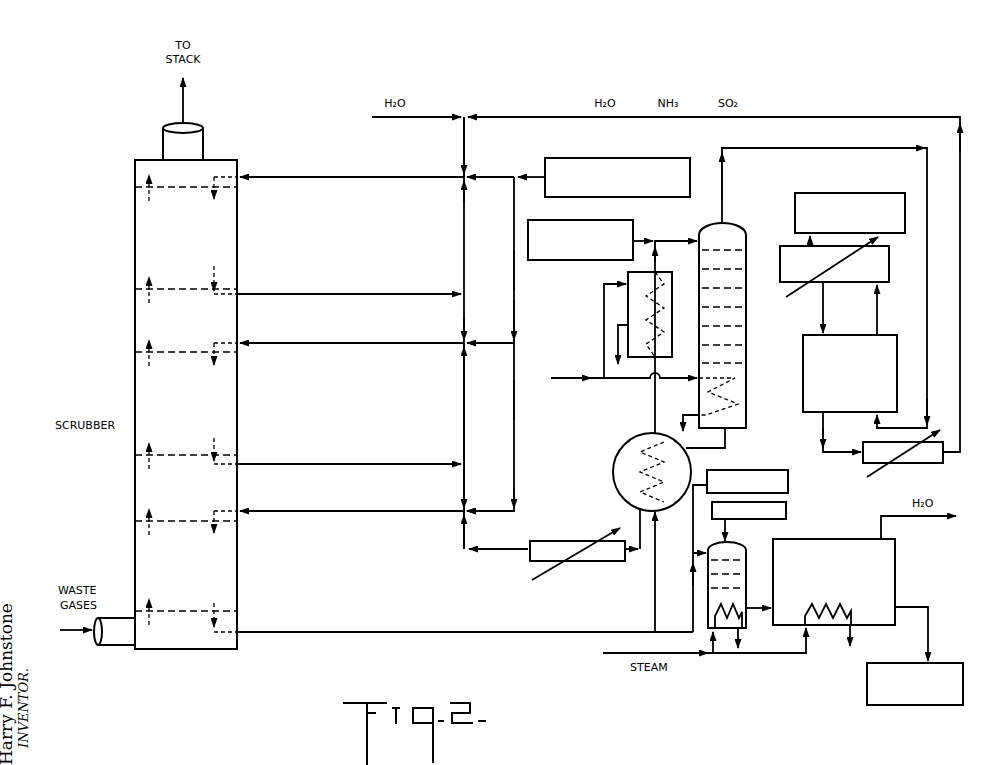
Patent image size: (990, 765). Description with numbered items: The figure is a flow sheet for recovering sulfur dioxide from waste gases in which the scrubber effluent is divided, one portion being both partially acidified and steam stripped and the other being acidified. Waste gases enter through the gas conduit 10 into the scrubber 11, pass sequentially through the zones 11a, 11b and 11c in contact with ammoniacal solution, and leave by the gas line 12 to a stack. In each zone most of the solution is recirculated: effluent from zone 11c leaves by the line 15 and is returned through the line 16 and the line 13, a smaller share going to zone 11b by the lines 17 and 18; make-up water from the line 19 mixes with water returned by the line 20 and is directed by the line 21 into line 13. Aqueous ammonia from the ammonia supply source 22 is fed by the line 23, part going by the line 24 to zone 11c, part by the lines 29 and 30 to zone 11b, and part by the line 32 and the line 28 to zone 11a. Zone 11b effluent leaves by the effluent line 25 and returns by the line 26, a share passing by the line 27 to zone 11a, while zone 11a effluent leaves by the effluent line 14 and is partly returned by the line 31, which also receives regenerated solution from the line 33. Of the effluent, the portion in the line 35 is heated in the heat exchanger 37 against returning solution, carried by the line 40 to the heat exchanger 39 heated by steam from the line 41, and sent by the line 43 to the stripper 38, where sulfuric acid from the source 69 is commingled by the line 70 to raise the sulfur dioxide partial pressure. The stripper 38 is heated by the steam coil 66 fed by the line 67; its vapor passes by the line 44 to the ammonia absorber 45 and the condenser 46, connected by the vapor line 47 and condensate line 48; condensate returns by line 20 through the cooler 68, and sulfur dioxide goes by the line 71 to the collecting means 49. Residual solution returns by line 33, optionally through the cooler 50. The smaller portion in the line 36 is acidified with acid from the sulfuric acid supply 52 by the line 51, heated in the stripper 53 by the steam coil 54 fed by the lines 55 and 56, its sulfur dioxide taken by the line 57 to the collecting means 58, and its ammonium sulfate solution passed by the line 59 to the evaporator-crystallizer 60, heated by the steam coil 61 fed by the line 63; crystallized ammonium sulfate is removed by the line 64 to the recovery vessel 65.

The gas conduit 10 is at (113, 646).
The scrubber 11 is at (135, 447).
The scrubber zone 11a is at (135, 556).
The scrubber zone 11b is at (237, 406).
The scrubber zone 11c is at (135, 232).
The gas line 12 is at (205, 136).
The line 13 is at (292, 177).
The effluent line 14 is at (322, 632).
The line 15 is at (292, 294).
The line 16 is at (464, 217).
The line 17 is at (464, 318).
The line 18 is at (318, 344).
The line 19 is at (428, 118).
The line 20 is at (528, 117).
The line 21 is at (467, 145).
The ammonia supply source 22 is at (655, 158).
The line 23 is at (536, 177).
The line 24 is at (490, 344).
The effluent line 25 is at (388, 464).
The line 26 is at (464, 381).
The line 27 is at (464, 488).
The line 28 is at (296, 512).
The line 29 is at (514, 270).
The line 30 is at (514, 326).
The line 31 is at (464, 540).
The line 32 is at (514, 402).
The line 33 is at (500, 549).
The line 35 is at (655, 586).
The line 36 is at (693, 592).
The heat exchanger 37 is at (614, 471).
The stripper 38 is at (746, 365).
The heat exchanger 39 is at (628, 326).
The line 40 is at (655, 406).
The line 41 is at (576, 378).
The line 43 is at (677, 241).
The line 44 is at (780, 148).
The ammonia absorber 45 is at (803, 396).
The condenser 46 is at (889, 274).
The vapor line 47 is at (880, 325).
The condensate line 48 is at (826, 292).
The collecting means 49 is at (884, 193).
The cooler 50 is at (574, 541).
The line 51 is at (693, 522).
The sulfuric acid supply 52 is at (772, 470).
The stripper 53 is at (746, 568).
The steam coil 54 is at (740, 640).
The line 55 is at (690, 654).
The line 56 is at (713, 645).
The line 57 is at (711, 531).
The collecting and recovering means 58 is at (786, 512).
The line 59 is at (756, 608).
The evaporator-crystallizer 60 is at (895, 578).
The steam coil 61 is at (846, 614).
The line 63 is at (778, 654).
The line 64 is at (928, 636).
The recovery vessel 65 is at (867, 693).
The steam coil 66 is at (746, 400).
The line 67 is at (618, 380).
The cooler 68 is at (925, 463).
The sulfuric acid source 69 is at (583, 220).
The line 70 is at (655, 241).
The line 71 is at (800, 246).